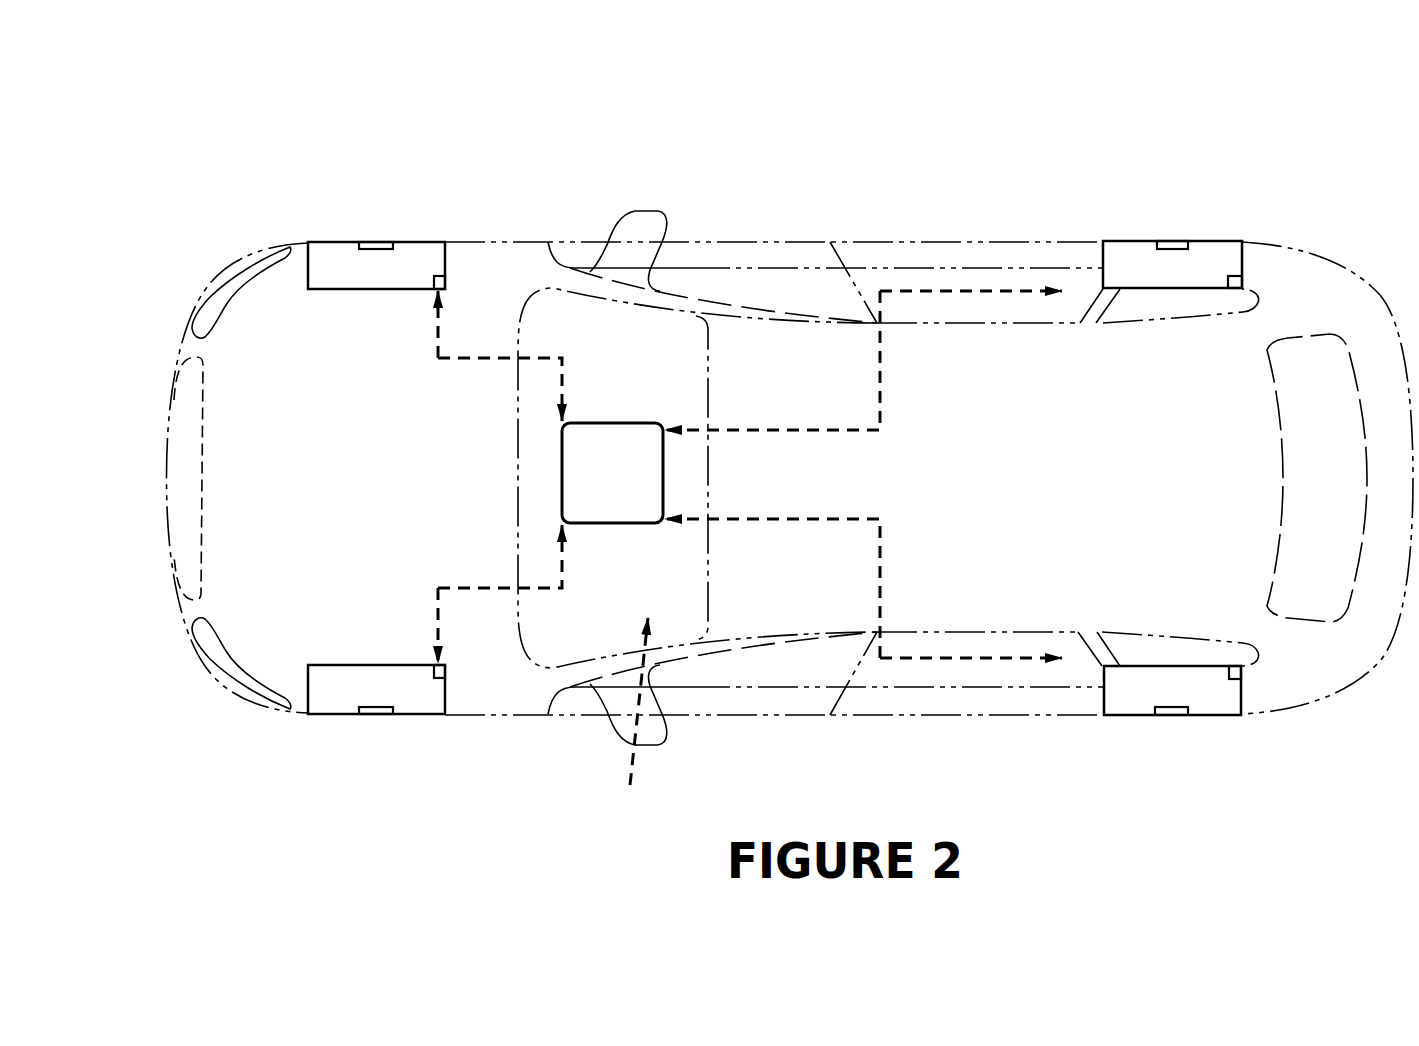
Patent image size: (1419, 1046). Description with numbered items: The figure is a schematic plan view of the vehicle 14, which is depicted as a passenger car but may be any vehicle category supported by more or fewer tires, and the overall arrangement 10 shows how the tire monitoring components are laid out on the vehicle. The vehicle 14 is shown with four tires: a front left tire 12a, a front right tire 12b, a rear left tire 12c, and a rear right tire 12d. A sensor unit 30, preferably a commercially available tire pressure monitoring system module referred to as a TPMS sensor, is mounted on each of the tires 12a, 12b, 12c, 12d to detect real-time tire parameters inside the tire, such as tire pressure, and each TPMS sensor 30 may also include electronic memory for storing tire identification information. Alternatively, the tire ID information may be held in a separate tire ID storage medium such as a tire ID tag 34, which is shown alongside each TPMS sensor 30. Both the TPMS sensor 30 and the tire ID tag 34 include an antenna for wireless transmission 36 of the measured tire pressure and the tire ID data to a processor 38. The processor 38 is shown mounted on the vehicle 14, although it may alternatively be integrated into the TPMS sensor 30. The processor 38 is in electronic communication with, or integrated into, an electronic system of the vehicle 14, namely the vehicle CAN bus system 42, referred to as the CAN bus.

The vehicle 10 is at (1003, 103).
The front left tire 12a is at (347, 718).
The front right tire 12b is at (426, 236).
The rear left tire 12c is at (1130, 718).
The rear right tire 12d is at (1226, 237).
The vehicle 14 is at (984, 240).
The sensor unit 30 is at (443, 283).
The tire ID tag 34 is at (382, 245).
The wireless transmission 36 is at (562, 366).
The processor 38 is at (552, 479).
The vehicle CAN bus system 42 is at (630, 785).